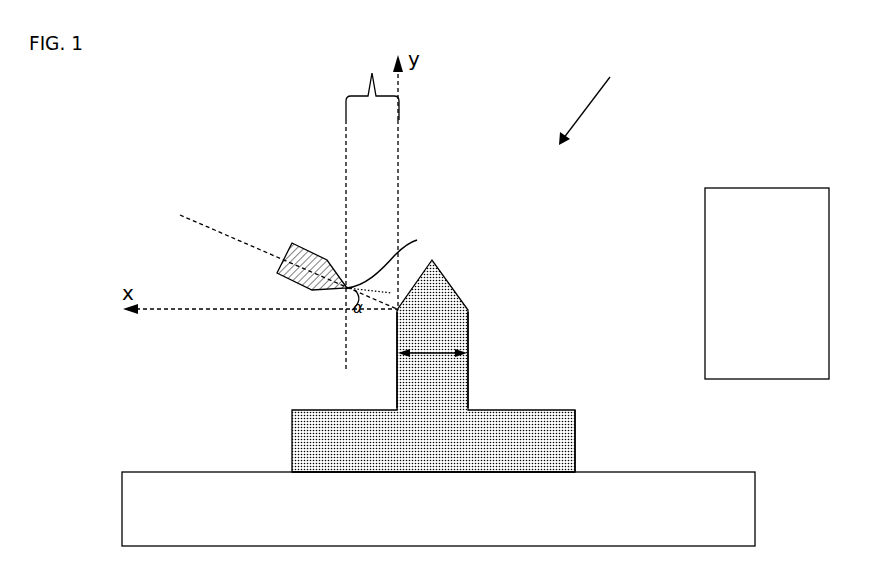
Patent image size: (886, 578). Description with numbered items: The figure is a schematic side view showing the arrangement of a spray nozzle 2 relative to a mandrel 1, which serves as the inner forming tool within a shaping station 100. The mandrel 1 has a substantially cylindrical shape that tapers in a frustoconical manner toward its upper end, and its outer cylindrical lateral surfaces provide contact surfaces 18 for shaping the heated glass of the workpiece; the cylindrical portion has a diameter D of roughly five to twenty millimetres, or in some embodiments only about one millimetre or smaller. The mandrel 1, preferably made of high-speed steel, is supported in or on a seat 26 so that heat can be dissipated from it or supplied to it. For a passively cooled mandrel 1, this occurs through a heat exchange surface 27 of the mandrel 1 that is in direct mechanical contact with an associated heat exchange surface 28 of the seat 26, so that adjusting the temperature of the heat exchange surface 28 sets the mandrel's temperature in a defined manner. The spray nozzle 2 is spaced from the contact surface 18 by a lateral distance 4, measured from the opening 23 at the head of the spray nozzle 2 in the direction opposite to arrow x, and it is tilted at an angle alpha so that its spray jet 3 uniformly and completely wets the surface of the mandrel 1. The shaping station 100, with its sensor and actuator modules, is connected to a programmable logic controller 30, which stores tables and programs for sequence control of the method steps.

The shaping station 100 is at (603, 92).
The mandrel 1 is at (460, 385).
The spray nozzle 2 is at (280, 281).
The spray jet 3 is at (373, 312).
The distance 4 is at (372, 72).
The contact surface 18 is at (468, 331).
The opening 23 is at (396, 254).
The seat 26 is at (205, 477).
The heat exchange surface of the mandrel 27 is at (565, 464).
The heat exchange surface of the seat 28 is at (488, 467).
The programmable logic controller 30 is at (705, 305).
The diameter D is at (429, 352).